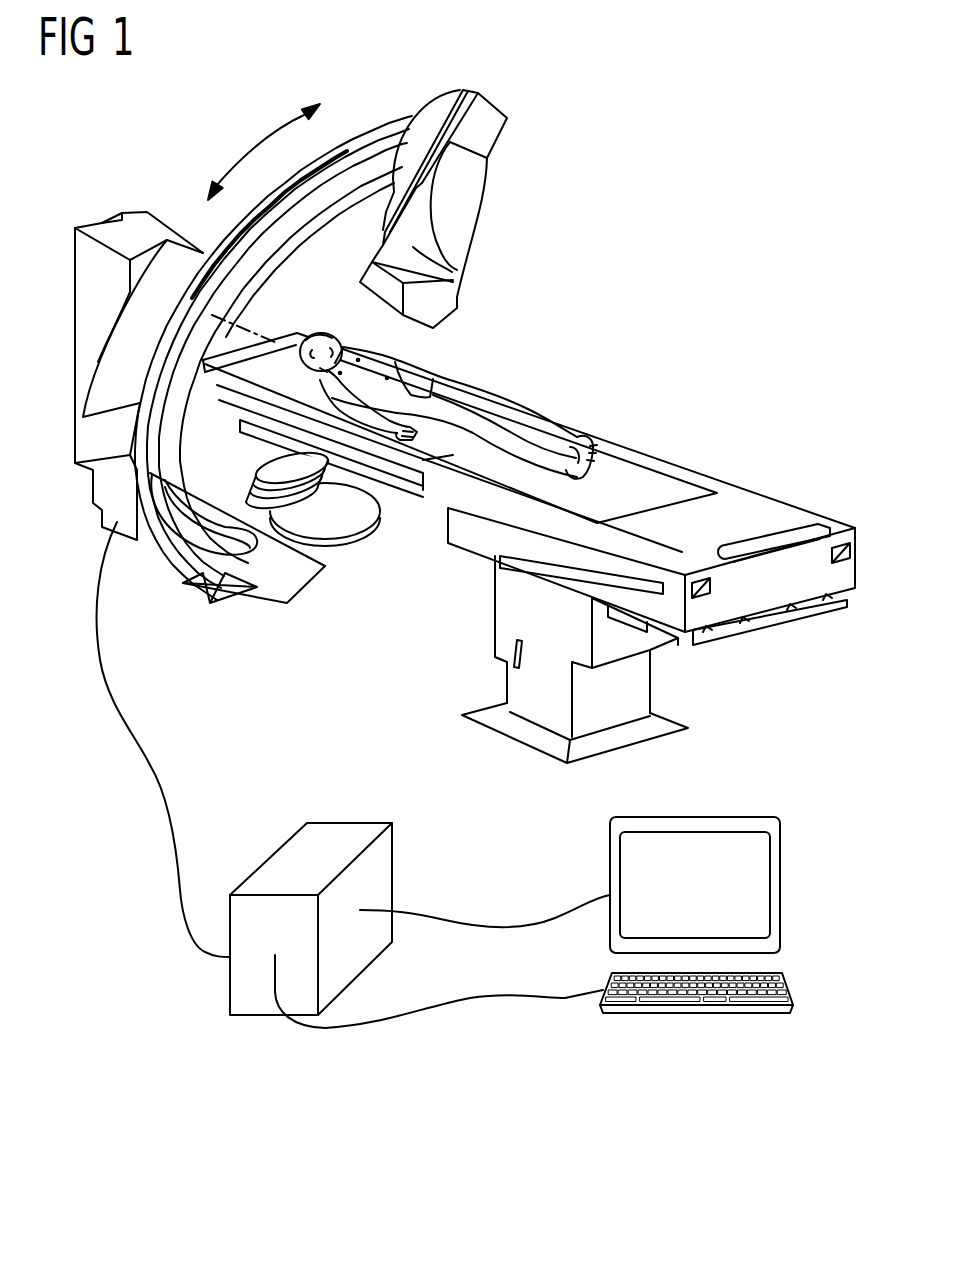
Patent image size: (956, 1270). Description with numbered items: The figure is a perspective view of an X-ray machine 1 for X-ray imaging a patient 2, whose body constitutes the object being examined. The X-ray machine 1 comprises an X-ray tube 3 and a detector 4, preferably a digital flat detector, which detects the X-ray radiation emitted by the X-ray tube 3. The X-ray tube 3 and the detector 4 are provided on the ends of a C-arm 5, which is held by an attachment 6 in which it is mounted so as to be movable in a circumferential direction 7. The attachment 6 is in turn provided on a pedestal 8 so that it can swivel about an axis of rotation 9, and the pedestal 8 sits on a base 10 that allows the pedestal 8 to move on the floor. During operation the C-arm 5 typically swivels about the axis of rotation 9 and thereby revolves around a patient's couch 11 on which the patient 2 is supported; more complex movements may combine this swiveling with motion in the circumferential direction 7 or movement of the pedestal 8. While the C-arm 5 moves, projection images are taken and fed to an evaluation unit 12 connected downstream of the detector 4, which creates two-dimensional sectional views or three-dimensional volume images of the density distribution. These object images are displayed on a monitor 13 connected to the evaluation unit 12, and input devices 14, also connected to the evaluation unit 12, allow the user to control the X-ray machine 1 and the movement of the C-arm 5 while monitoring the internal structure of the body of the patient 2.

The X-ray machine 1 is at (568, 165).
The patient 2 is at (463, 398).
The X-ray tube 3 is at (288, 508).
The detector 4 is at (455, 200).
The C-arm 5 is at (367, 166).
The attachment 6 is at (125, 340).
The circumferential direction 7 is at (250, 152).
The pedestal 8 is at (90, 225).
The axis of rotation 9 is at (258, 328).
The base 10 is at (360, 512).
The patient's couch 11 is at (750, 508).
The evaluation unit 12 is at (323, 835).
The monitor 13 is at (784, 873).
The input devices 14 is at (700, 1012).